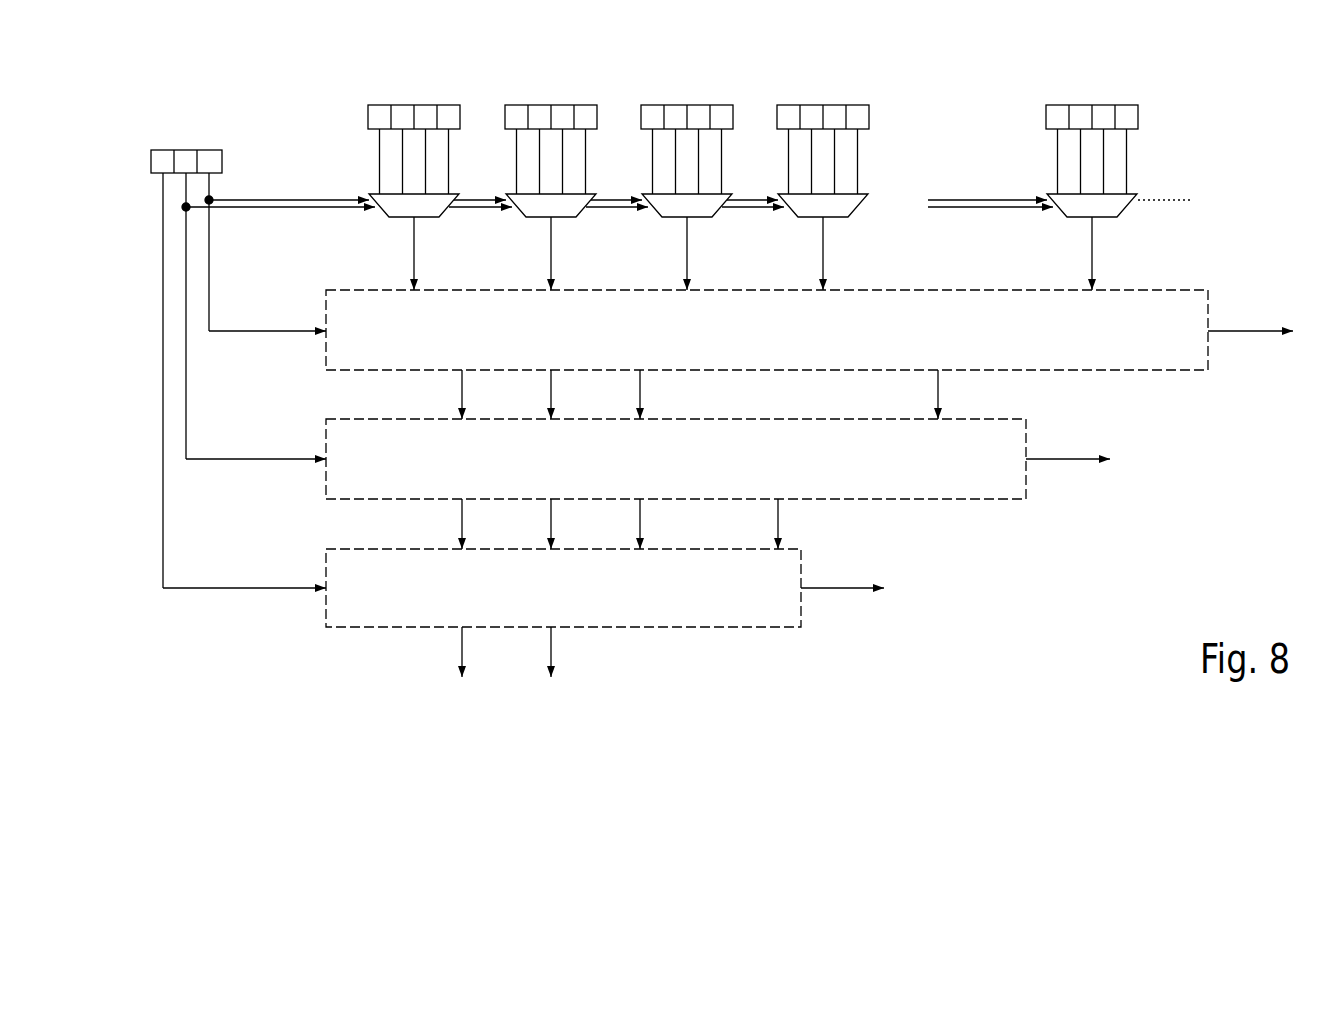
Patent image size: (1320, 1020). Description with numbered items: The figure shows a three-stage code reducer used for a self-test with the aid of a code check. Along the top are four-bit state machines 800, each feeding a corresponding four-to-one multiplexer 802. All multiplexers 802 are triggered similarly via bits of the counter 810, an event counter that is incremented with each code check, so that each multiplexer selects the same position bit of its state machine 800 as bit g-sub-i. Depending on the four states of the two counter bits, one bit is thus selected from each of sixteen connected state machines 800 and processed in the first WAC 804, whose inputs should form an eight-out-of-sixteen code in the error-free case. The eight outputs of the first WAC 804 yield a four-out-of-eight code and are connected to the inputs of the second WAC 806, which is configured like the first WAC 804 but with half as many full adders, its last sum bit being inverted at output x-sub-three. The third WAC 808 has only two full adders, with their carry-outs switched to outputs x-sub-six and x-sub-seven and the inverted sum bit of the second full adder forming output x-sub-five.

The state machine 800 is at (414, 105).
The 4-to-1 multiplexer 802 is at (442, 203).
The first WAC 804 is at (1148, 355).
The second WAC 806 is at (964, 484).
The third WAC 808 is at (739, 612).
The counter 810 is at (151, 167).